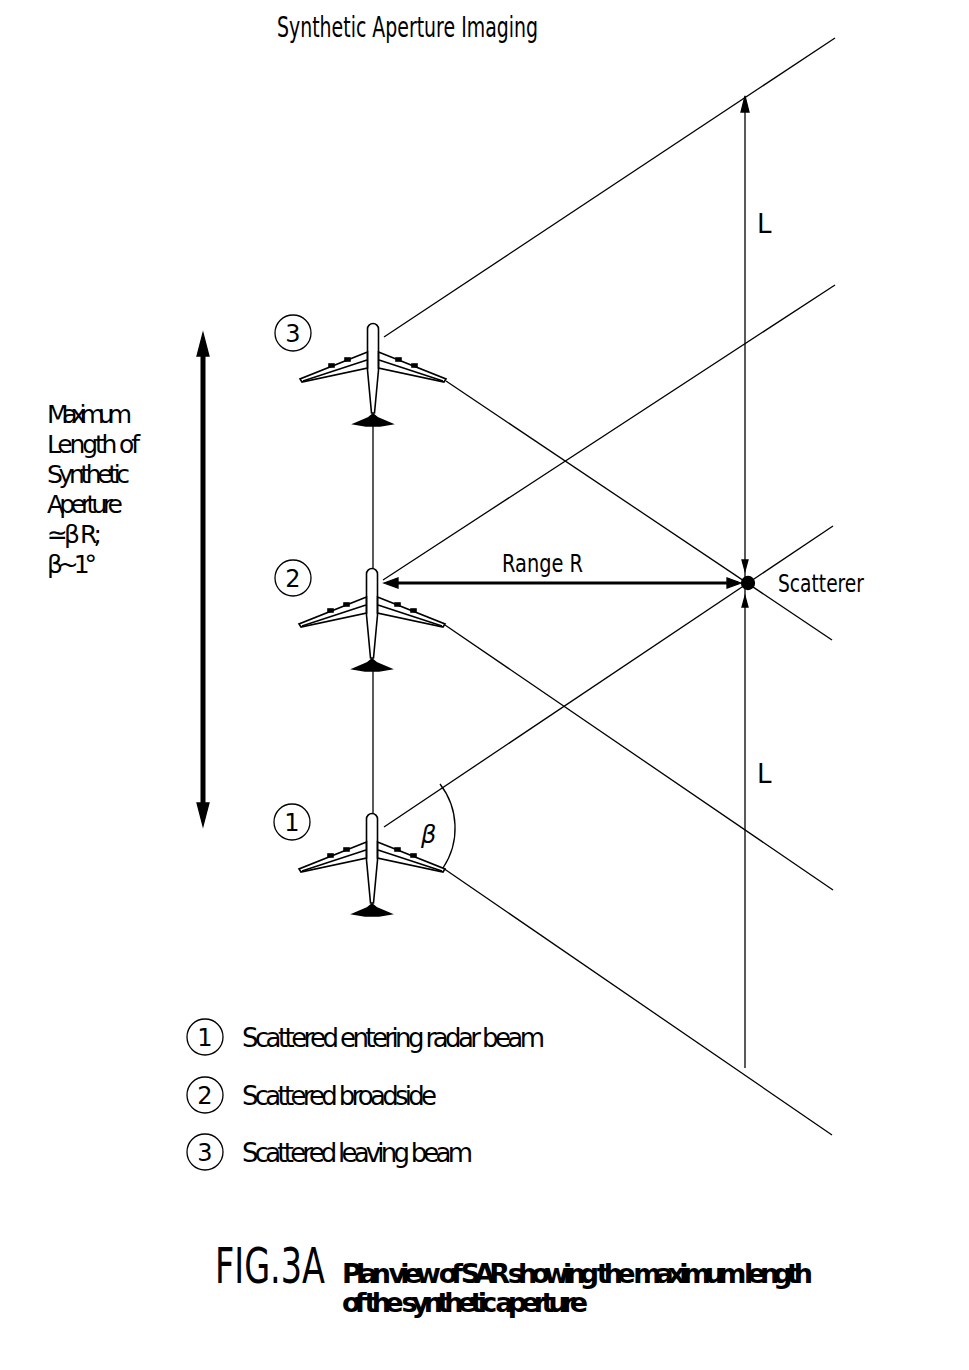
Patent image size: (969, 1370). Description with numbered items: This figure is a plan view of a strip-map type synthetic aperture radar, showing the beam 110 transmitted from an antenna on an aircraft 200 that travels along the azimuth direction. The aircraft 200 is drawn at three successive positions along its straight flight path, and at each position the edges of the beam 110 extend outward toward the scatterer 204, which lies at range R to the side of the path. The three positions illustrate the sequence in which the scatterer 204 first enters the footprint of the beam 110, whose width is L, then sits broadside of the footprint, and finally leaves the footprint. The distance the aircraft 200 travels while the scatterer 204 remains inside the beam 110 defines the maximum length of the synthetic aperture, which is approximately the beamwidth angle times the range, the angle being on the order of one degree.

The beam 110 is at (501, 259).
The aircraft 200 is at (305, 853).
The scatterer 204 is at (746, 566).